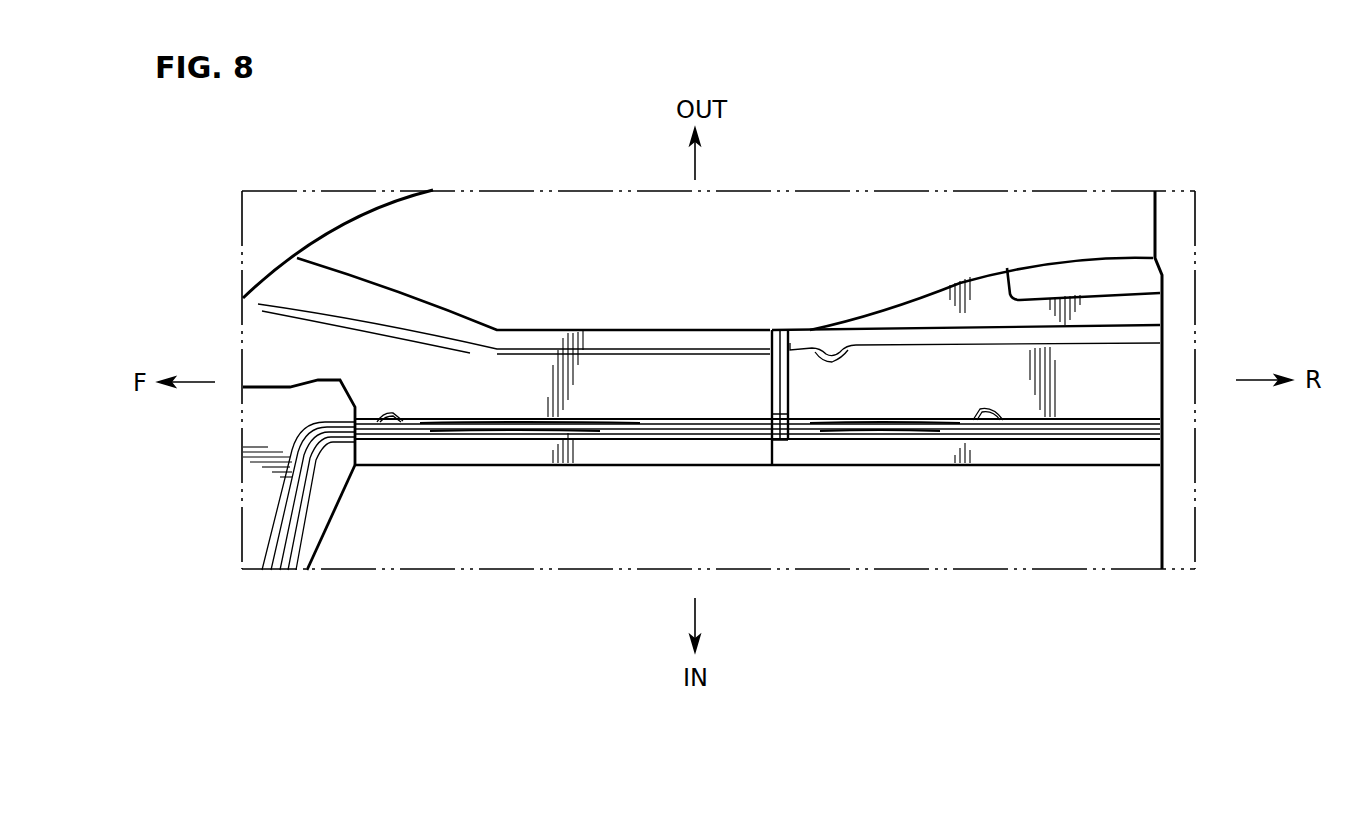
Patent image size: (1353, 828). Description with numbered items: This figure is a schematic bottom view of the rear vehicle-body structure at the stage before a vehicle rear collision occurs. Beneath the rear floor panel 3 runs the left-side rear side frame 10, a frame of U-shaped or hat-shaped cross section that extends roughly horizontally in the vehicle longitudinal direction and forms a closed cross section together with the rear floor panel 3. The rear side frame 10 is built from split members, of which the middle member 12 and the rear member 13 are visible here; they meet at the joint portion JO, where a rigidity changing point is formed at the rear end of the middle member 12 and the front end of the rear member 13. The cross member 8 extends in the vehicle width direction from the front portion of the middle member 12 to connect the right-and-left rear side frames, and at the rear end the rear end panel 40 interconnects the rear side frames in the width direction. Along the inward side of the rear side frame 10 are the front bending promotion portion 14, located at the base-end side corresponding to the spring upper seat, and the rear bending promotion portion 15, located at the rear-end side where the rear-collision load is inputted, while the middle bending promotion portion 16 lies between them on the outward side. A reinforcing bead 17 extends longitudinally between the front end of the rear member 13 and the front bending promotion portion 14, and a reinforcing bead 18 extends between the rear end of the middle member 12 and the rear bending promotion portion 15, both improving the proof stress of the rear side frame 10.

The rear floor panel 3 is at (889, 556).
The cross member 8 is at (248, 493).
The rear side frame 10 is at (690, 306).
The middle member 12 is at (517, 362).
The rear member 13 is at (913, 307).
The front bending promotion portion 14 is at (392, 423).
The rear bending promotion portion 15 is at (988, 426).
The middle bending promotion portion 16 is at (823, 350).
The reinforcing bead 17 is at (527, 432).
The reinforcing bead 18 is at (857, 434).
The rear end panel 40 is at (1158, 532).
The joint portion JO is at (733, 437).